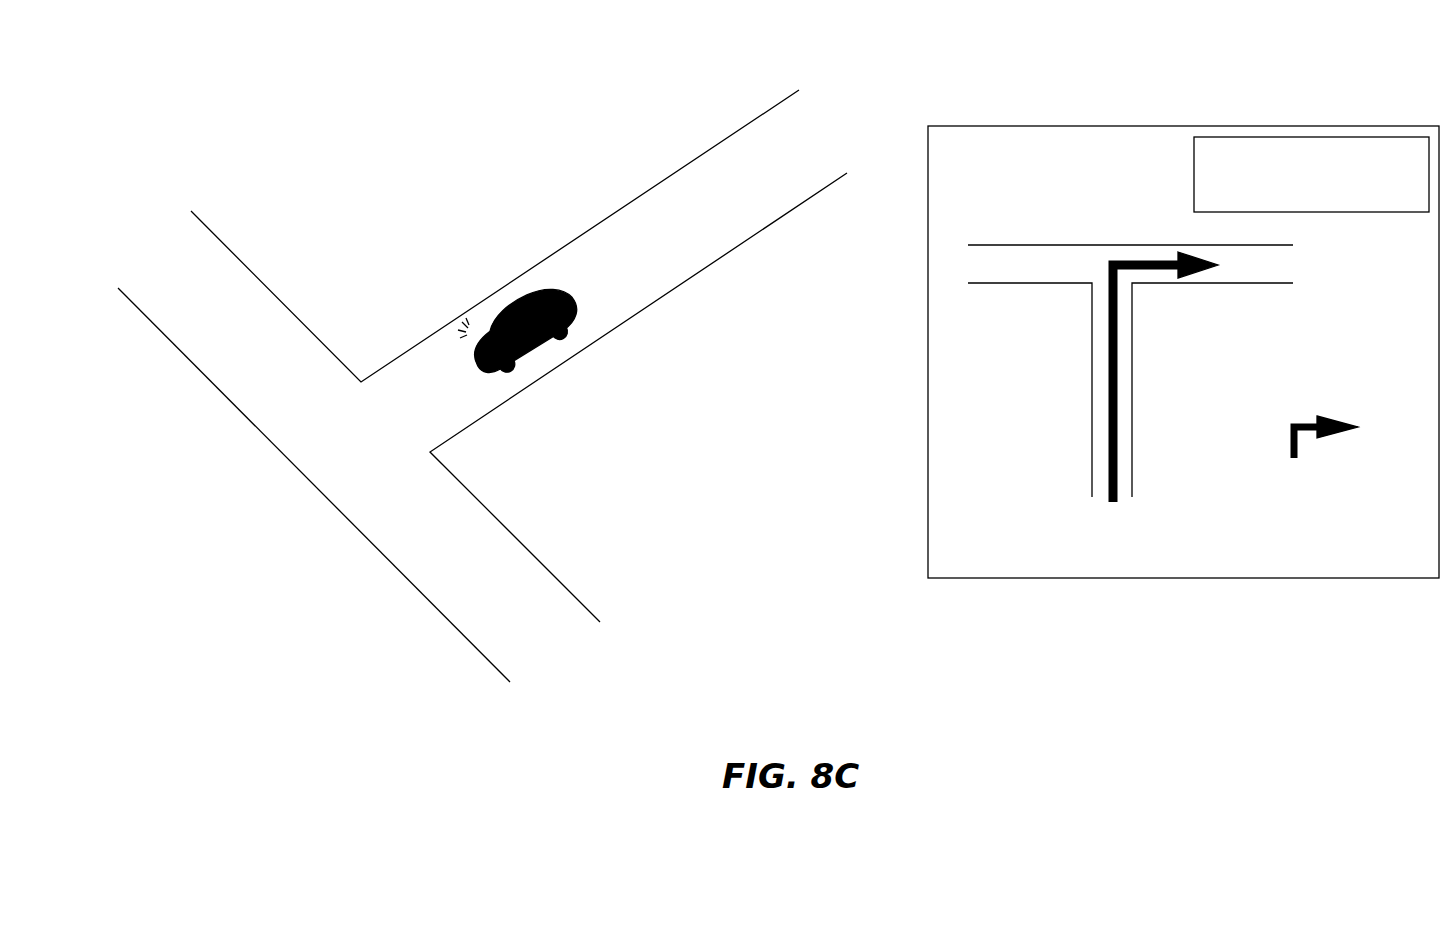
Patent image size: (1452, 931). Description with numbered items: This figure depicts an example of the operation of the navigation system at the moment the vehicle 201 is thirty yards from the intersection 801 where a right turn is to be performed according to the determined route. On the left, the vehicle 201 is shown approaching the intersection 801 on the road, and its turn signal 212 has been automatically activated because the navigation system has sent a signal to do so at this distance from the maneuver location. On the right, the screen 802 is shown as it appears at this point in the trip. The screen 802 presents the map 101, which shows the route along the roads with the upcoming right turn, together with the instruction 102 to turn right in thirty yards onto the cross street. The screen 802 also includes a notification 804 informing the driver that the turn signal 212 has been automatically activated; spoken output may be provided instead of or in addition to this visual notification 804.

The intersection 801 is at (377, 457).
The vehicle 201 is at (588, 323).
The turn signal 212 is at (473, 320).
The screen 802 is at (1100, 577).
The notification 804 is at (1304, 137).
The map 101 is at (1077, 305).
The instructions 102 is at (1358, 577).